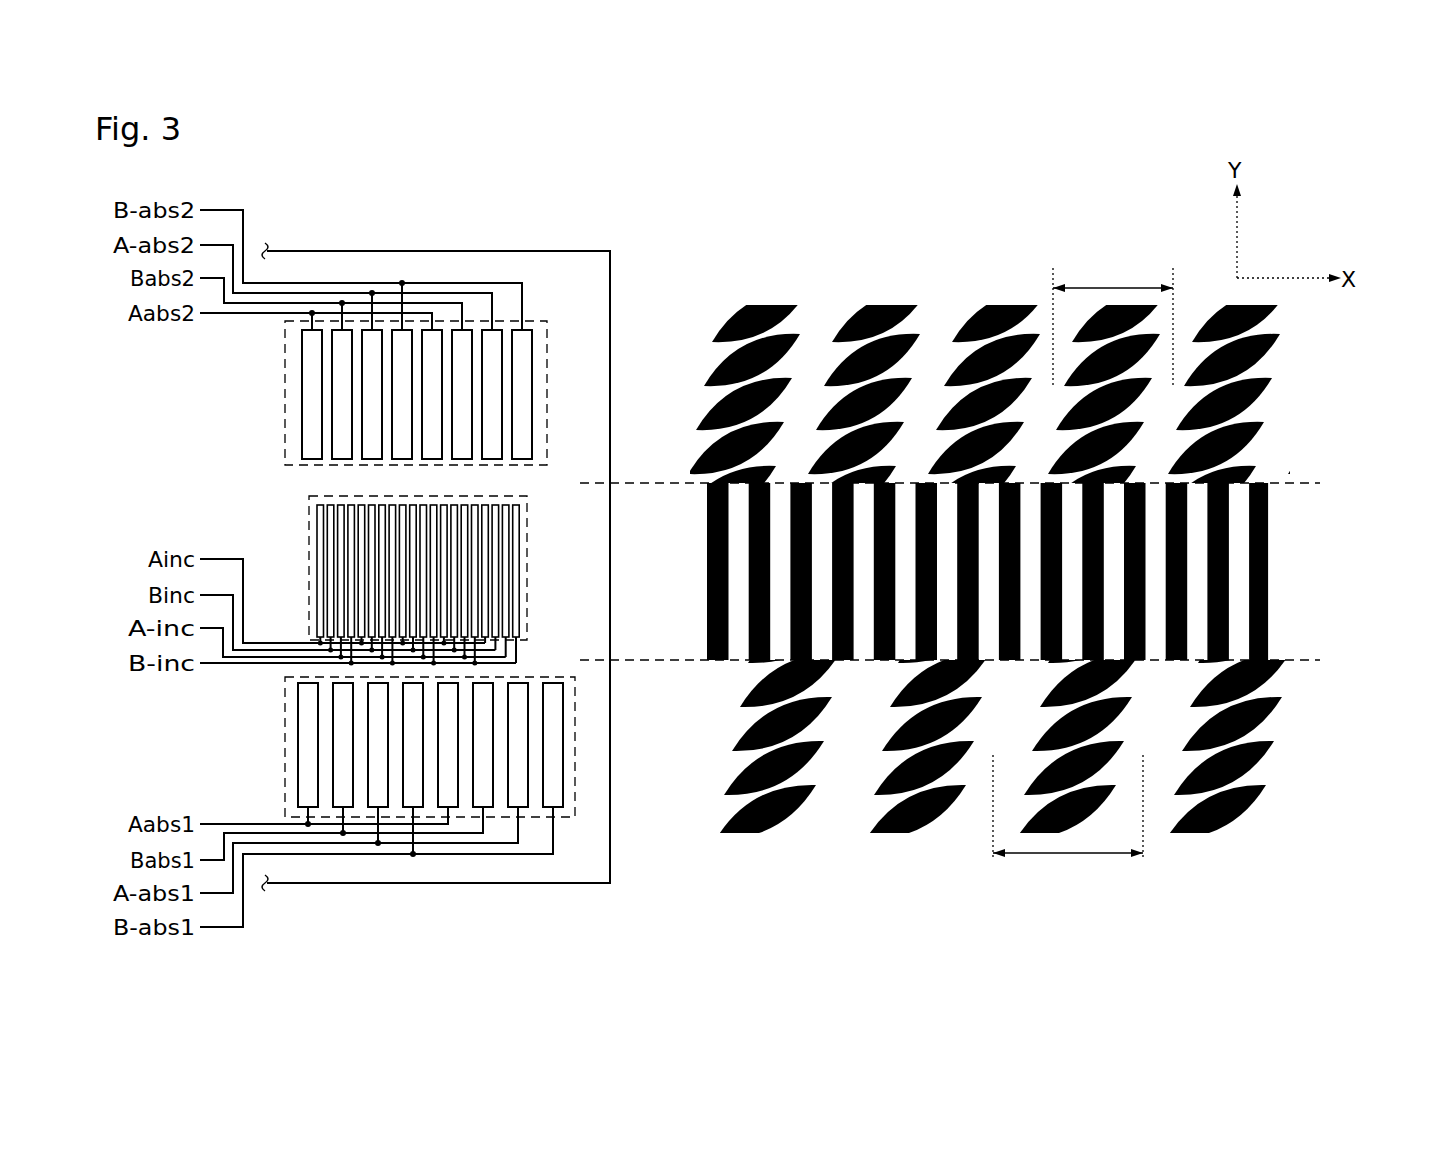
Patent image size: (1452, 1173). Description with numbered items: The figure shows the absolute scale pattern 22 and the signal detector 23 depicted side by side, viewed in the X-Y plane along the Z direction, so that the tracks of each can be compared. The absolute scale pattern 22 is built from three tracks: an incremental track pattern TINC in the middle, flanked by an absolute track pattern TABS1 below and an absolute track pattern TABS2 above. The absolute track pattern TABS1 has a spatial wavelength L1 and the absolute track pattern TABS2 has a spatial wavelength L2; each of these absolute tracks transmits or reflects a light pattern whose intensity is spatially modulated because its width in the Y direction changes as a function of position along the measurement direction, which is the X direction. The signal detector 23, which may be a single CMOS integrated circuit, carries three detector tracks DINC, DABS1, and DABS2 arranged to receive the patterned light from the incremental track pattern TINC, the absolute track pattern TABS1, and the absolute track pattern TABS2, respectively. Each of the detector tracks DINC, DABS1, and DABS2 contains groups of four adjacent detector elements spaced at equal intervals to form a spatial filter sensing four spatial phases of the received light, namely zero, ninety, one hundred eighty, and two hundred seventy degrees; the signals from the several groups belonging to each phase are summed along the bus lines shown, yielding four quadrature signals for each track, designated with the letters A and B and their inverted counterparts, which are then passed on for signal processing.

The absolute scale pattern 22 is at (1004, 542).
The signal detector 23 is at (425, 236).
The detector track DABS2 is at (266, 398).
The detector track DINC is at (292, 511).
The detector track DABS1 is at (266, 750).
The absolute track pattern TABS2 is at (1312, 380).
The incremental track pattern TINC is at (1312, 578).
The absolute track pattern TABS1 is at (1312, 760).
The spatial wavelength L2 is at (1113, 326).
The spatial wavelength L1 is at (1068, 822).